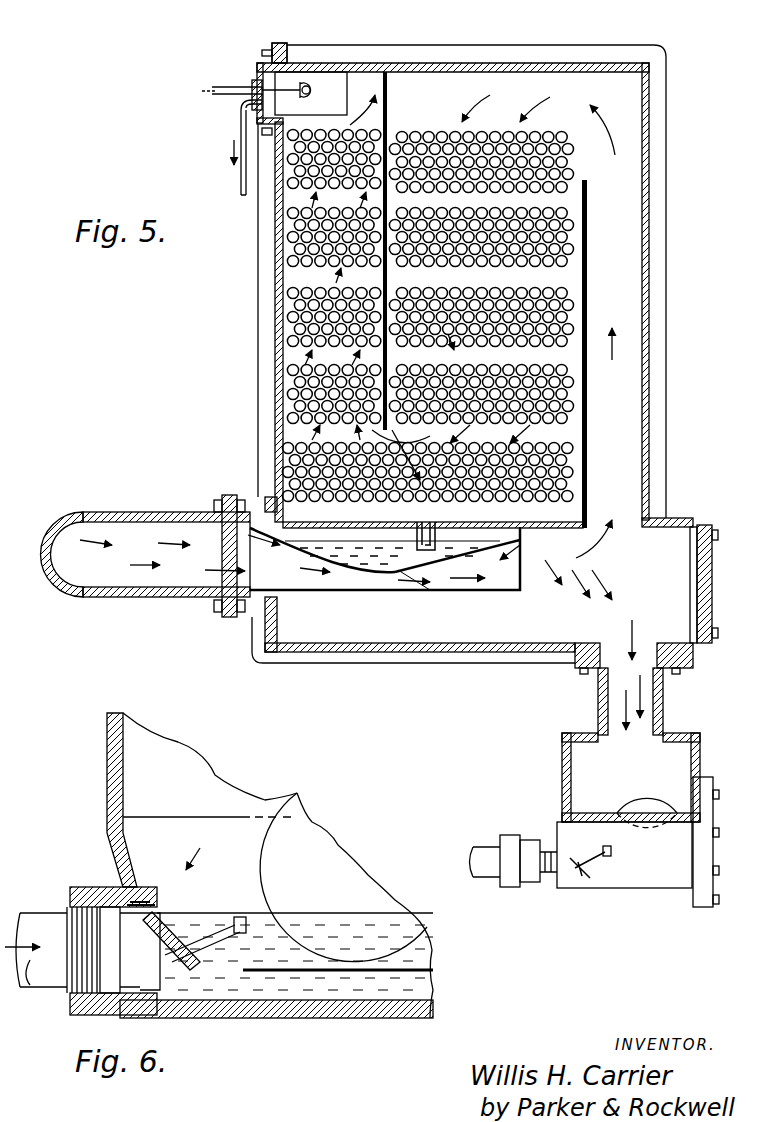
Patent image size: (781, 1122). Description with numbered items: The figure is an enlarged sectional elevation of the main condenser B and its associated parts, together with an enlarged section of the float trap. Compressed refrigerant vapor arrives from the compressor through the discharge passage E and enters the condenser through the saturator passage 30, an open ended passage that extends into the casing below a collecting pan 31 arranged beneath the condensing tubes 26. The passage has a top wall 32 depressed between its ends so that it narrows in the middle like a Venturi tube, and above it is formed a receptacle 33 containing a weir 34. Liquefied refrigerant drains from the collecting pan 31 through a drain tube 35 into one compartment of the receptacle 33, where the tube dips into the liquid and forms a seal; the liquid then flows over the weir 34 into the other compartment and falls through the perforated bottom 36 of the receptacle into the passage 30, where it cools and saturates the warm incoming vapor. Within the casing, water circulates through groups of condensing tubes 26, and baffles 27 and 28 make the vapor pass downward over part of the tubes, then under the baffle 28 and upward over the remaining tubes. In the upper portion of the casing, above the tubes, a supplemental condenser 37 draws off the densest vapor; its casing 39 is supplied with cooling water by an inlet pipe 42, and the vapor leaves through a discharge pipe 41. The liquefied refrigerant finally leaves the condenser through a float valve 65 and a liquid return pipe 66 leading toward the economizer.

In FIG. 5, the main condenser B is at (666, 295).
In FIG. 5, the discharge passage E is at (146, 556).
In FIG. 5, the condensing tubes 26 is at (585, 120).
In FIG. 5, the baffle 27 is at (588, 248).
In FIG. 5, the baffle 28 is at (392, 118).
In FIG. 5, the saturator passage 30 is at (298, 590).
In FIG. 5, the collecting pan 31 is at (372, 522).
In FIG. 5, the top wall 32 is at (362, 573).
In FIG. 5, the receptacle 33 is at (392, 542).
In FIG. 5, the weir 34 is at (455, 580).
In FIG. 5, the drain tube 35 is at (438, 528).
In FIG. 5, the trough bottom 36 is at (407, 590).
In FIG. 5, the supplemental condenser 37 is at (270, 50).
In FIG. 5, the casing 39 is at (304, 93).
In FIG. 5, the discharge pipe 41 is at (238, 128).
In FIG. 5, the inlet pipe 42 is at (232, 62).
In FIG. 5, the float valve 65 is at (592, 880).
In FIG. 6, the float valve 65 is at (216, 905).
In FIG. 5, the liquid return pipe 66 is at (500, 845).
In FIG. 6, the liquid return pipe 66 is at (47, 930).